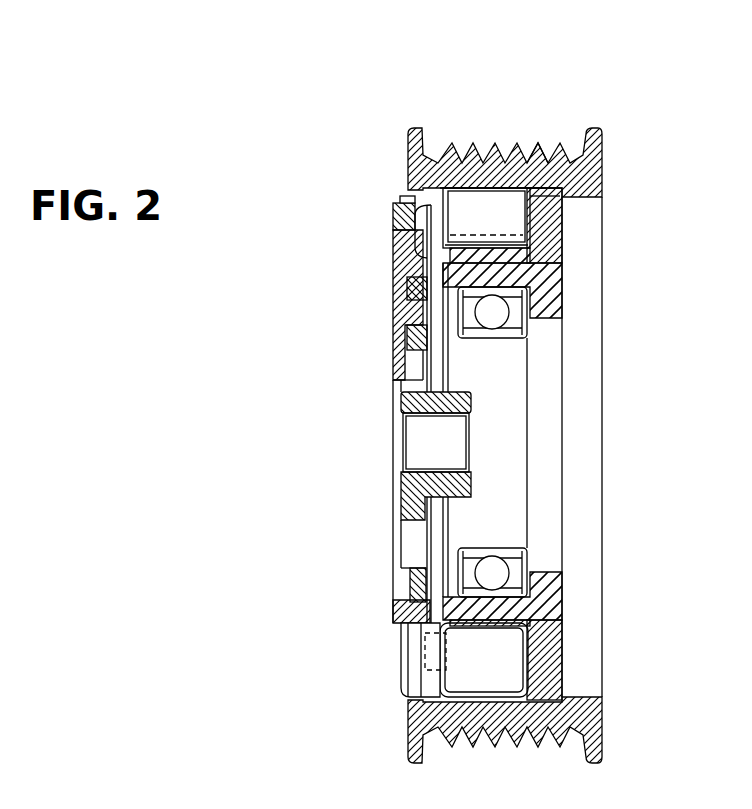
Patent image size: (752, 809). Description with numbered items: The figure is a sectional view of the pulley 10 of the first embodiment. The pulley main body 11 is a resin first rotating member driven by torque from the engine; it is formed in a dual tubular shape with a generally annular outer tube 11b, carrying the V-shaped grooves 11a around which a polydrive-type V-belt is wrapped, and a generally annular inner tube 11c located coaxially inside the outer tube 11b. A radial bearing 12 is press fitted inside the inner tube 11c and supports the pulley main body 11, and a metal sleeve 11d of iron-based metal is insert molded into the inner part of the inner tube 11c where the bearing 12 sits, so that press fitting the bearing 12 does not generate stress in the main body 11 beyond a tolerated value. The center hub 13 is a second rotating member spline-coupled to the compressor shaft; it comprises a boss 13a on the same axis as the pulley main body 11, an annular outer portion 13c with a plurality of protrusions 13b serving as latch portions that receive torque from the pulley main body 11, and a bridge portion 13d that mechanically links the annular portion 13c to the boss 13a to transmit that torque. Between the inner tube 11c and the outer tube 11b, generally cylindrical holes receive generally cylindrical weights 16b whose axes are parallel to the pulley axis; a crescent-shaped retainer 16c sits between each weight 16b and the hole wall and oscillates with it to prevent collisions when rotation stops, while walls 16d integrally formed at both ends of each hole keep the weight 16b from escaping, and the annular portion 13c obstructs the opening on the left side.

The pulley 10 is at (606, 100).
The pulley main body 11 is at (607, 149).
The V-shaped grooves 11a is at (548, 160).
The outer tube 11b is at (586, 173).
The inner tube 11c is at (545, 263).
The metal sleeve 11d is at (536, 298).
The radial bearing 12 is at (522, 330).
The center hub 13 is at (390, 306).
The boss 13a is at (412, 400).
The protrusions 13b is at (502, 660).
The annular outer portion 13c is at (410, 200).
The bridge portion 13d is at (408, 340).
The weight 16b is at (498, 205).
The retainer 16c is at (546, 252).
The walls 16d is at (410, 220).